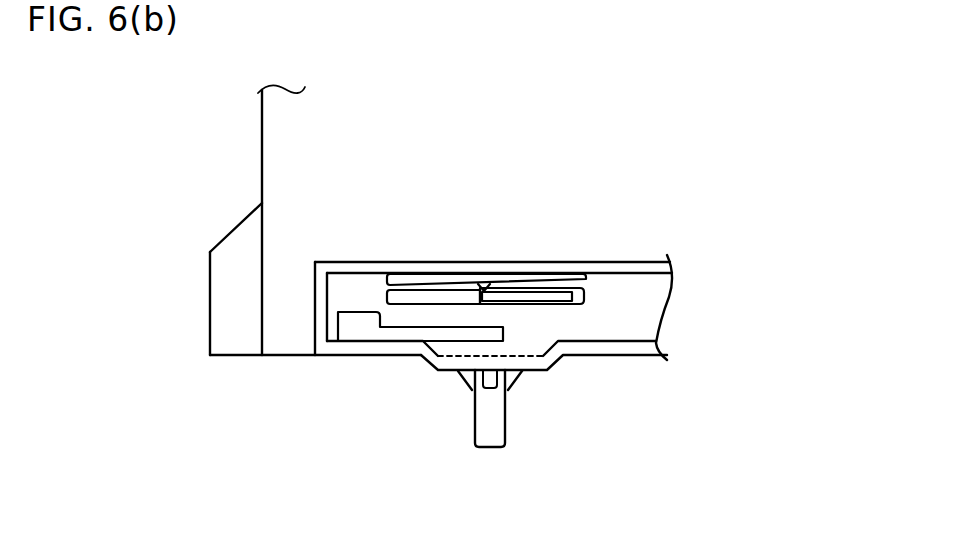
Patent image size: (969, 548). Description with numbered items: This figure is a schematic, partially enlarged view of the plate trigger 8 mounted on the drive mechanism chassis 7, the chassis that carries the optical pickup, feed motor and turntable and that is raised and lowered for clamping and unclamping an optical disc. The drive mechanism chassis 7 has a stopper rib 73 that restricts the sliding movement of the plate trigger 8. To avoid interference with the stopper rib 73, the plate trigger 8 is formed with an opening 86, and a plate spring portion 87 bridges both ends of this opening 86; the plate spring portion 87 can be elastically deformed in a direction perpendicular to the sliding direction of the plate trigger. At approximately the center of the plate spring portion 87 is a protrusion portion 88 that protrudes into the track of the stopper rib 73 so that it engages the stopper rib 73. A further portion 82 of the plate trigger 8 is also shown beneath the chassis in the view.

The drive mechanism chassis 7 is at (258, 152).
The plate trigger 8 is at (627, 290).
The opening 86 is at (422, 294).
The plate spring portion 87 is at (440, 285).
The protrusion portion 88 is at (488, 289).
The stopper rib 73 is at (552, 302).
The terminal pin 82 is at (485, 403).